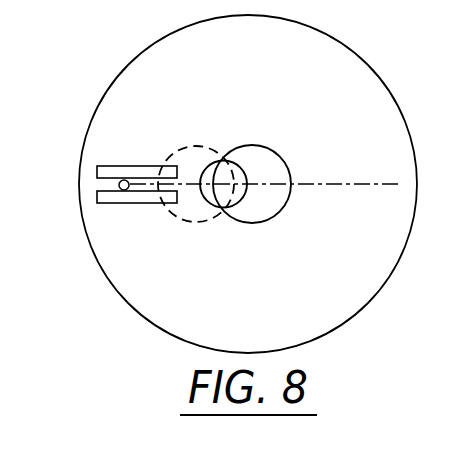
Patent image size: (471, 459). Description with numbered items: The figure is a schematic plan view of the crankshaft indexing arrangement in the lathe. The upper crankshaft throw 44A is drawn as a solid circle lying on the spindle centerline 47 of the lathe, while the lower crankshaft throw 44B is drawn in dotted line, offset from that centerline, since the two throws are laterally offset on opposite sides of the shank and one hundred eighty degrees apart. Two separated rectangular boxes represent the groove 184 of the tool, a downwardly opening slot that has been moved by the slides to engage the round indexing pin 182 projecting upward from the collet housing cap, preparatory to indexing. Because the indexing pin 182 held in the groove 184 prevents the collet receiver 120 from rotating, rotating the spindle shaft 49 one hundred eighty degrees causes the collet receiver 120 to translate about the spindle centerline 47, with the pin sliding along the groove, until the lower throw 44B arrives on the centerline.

The spindle shaft 49 is at (329, 65).
The lower crankshaft throw 44B is at (180, 147).
The spindle centerline 47 is at (255, 186).
The upper crankshaft throw 44A is at (270, 220).
The collet receiver 120 is at (243, 173).
The groove 184 is at (99, 183).
The indexing pin 182 is at (120, 189).